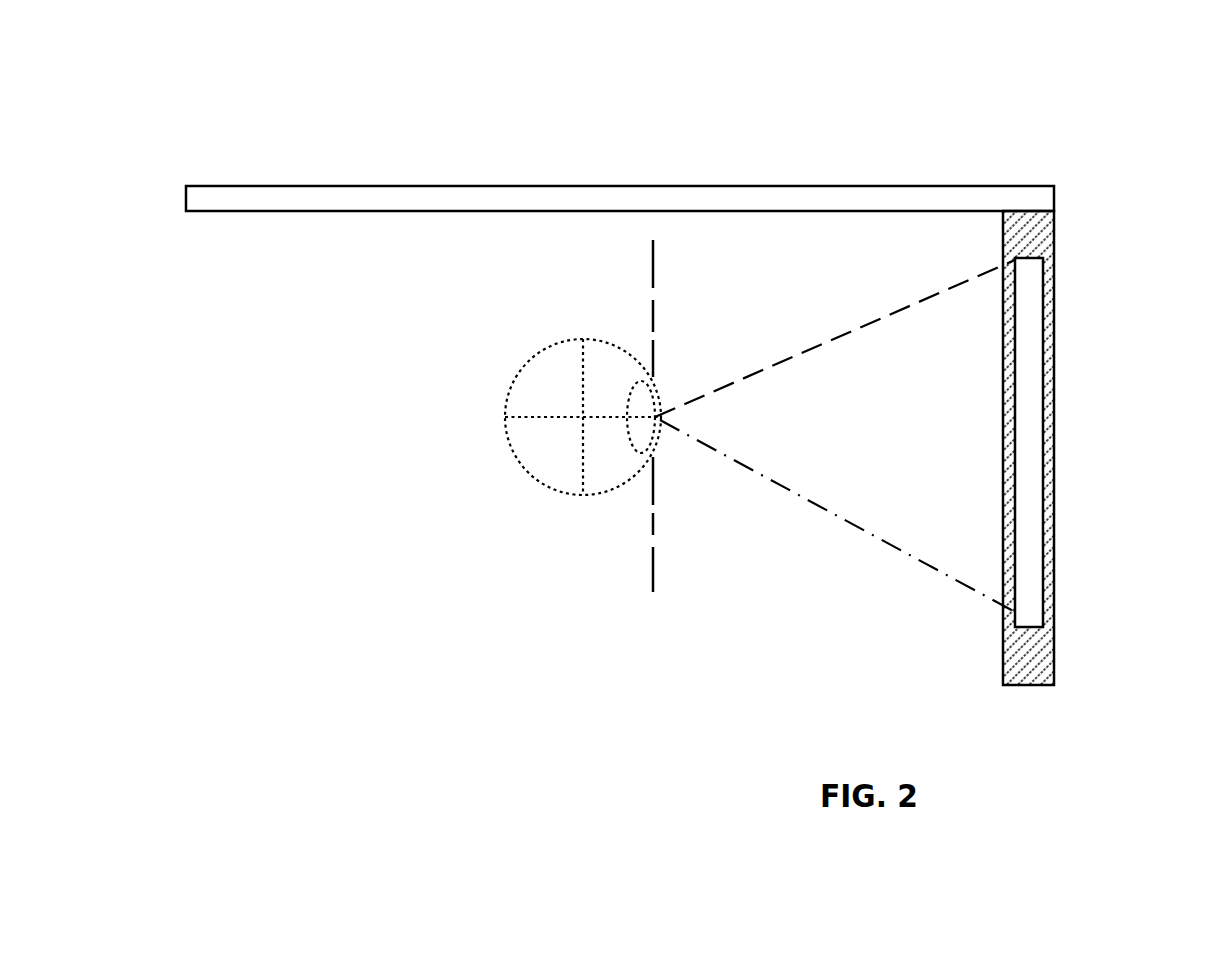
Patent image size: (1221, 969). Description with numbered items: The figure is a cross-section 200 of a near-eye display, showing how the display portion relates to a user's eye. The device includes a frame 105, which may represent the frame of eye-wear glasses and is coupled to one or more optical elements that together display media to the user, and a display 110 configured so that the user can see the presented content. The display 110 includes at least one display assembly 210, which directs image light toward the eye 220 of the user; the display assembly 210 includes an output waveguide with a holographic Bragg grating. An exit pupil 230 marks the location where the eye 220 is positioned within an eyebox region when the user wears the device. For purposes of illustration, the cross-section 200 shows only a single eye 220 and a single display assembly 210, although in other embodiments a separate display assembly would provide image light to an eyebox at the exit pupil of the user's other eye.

The cross-section 200 is at (362, 88).
The frame 105 is at (905, 171).
The display 110 is at (1073, 562).
The display assembly 210 is at (1037, 378).
The eye 220 is at (534, 341).
The exit pupil 230 is at (637, 526).